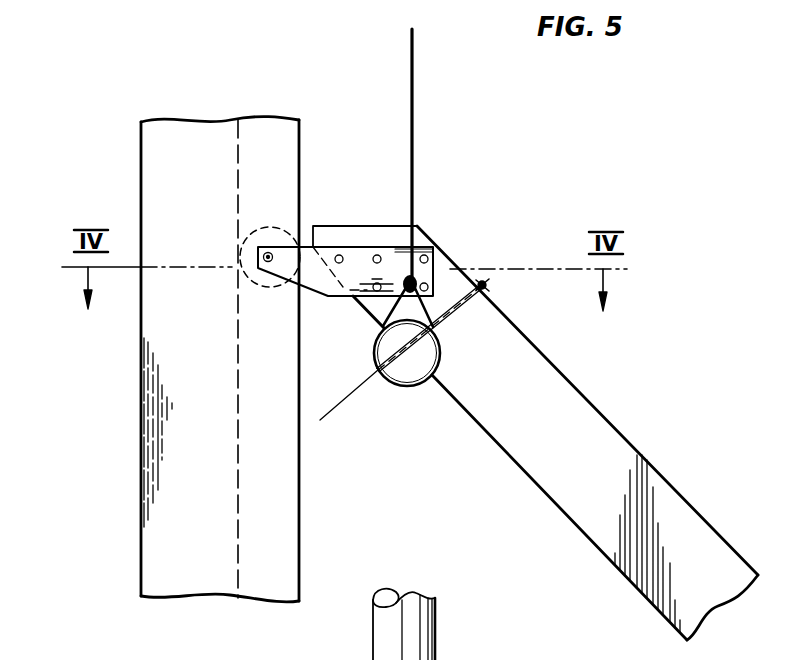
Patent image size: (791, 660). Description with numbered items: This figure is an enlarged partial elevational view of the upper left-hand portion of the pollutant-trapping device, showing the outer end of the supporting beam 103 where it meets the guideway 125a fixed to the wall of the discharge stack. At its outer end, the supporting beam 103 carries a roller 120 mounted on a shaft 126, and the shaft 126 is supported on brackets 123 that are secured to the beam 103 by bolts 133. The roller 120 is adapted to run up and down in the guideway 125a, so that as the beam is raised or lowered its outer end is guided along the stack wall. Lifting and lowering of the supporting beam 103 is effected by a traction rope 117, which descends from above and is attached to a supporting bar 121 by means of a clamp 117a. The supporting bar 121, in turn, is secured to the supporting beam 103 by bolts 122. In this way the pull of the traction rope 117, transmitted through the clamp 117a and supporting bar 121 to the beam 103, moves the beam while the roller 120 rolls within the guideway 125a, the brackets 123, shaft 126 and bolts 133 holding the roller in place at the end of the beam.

The supporting beam 103 is at (543, 472).
The traction rope 117 is at (413, 188).
The clamp 117a is at (436, 282).
The roller 120 is at (256, 237).
The supporting bar 121 is at (385, 378).
The bolts 122 is at (485, 285).
The brackets 123 is at (354, 299).
The guideway 125a is at (285, 545).
The shaft 126 is at (268, 252).
The bolts 133 is at (339, 254).